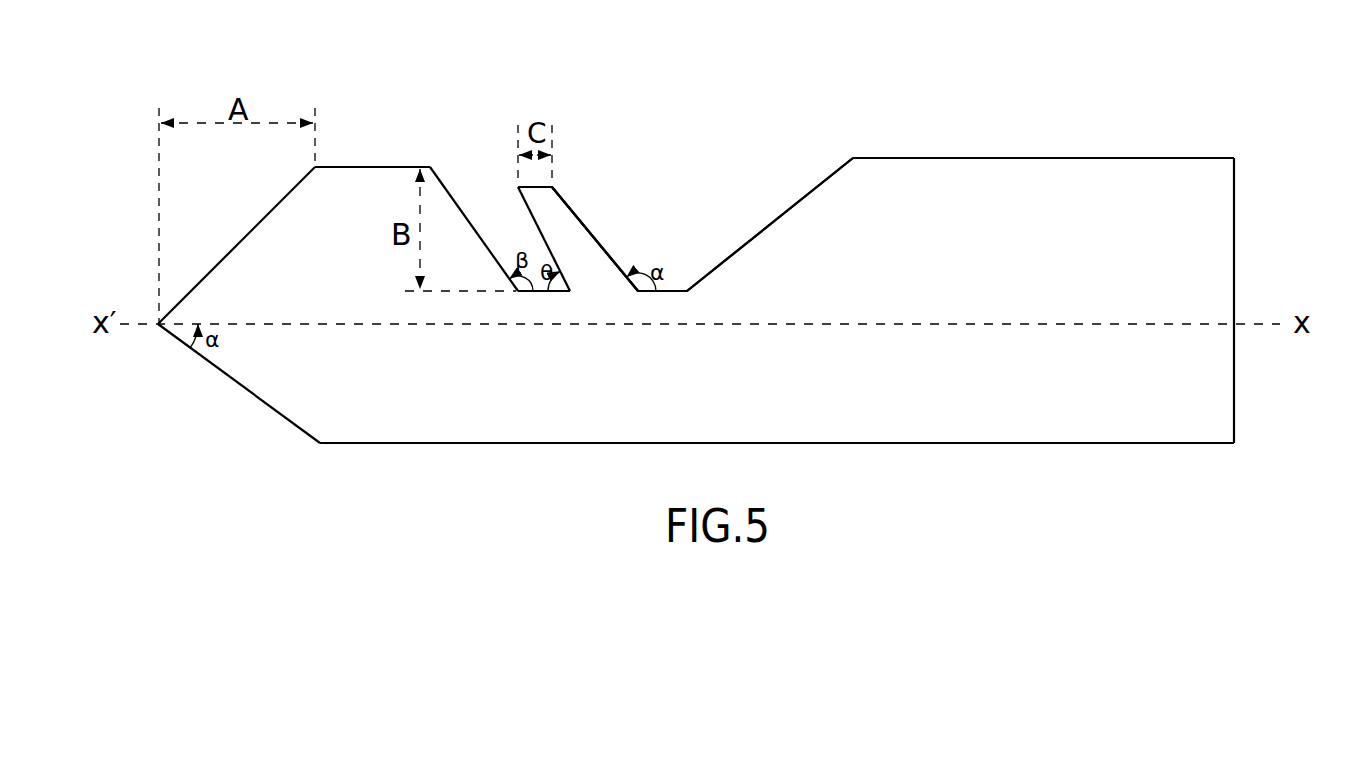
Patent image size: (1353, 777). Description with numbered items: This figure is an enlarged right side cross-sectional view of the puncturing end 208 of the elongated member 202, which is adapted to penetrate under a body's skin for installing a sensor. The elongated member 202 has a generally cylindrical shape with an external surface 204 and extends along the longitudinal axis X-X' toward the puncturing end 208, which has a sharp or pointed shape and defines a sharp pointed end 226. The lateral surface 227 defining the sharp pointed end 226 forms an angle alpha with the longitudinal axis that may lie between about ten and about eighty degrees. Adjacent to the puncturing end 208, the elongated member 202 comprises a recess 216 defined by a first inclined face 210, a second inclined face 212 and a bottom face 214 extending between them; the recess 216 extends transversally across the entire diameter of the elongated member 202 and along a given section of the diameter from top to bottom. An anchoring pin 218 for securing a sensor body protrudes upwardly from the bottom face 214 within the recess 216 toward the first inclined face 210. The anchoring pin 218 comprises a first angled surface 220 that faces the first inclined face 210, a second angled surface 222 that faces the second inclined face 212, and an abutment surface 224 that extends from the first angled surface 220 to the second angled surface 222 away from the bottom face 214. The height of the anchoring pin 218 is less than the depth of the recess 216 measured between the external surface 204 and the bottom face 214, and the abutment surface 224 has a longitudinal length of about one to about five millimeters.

The elongated member 202 is at (1182, 213).
The external surface 204 is at (1142, 157).
The puncturing end 208 is at (270, 520).
The first inclined face 210 is at (460, 197).
The second inclined face 212 is at (807, 193).
The bottom face 214 is at (678, 287).
The recess 216 is at (662, 148).
The anchoring pin 218 is at (575, 224).
The first angled surface 220 is at (525, 213).
The second angled surface 222 is at (603, 237).
The abutment surface 224 is at (537, 185).
The sharp pointed end 226 is at (177, 392).
The lateral surface 227 is at (245, 393).